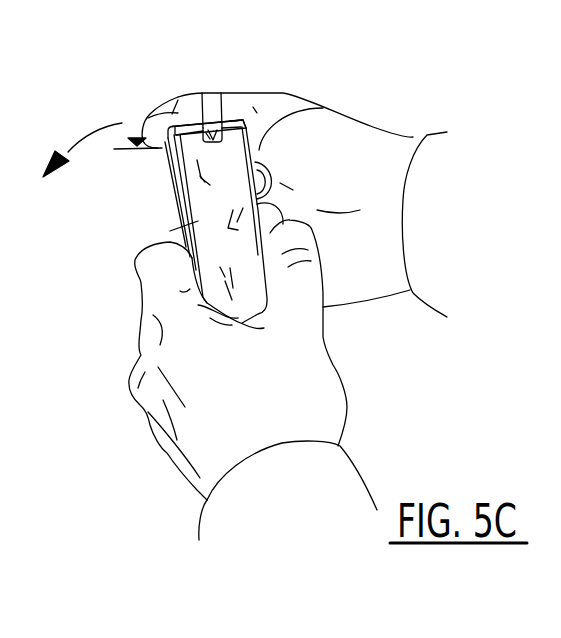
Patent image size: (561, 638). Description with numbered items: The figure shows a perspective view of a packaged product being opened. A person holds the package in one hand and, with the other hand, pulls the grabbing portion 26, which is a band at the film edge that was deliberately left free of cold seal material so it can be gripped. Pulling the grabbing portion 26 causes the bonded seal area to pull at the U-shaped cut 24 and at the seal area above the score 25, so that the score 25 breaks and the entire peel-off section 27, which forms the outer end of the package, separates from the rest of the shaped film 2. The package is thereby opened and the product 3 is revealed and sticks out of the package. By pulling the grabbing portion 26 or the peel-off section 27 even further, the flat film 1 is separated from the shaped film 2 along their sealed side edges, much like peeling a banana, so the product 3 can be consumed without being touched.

The flat film 1 is at (168, 197).
The shaped film 2 is at (175, 233).
The product 3 is at (220, 123).
The U-shaped cut 24 is at (200, 124).
The score 25 is at (237, 118).
The grabbing portion 26 is at (125, 148).
The peel-off section 27 is at (136, 137).